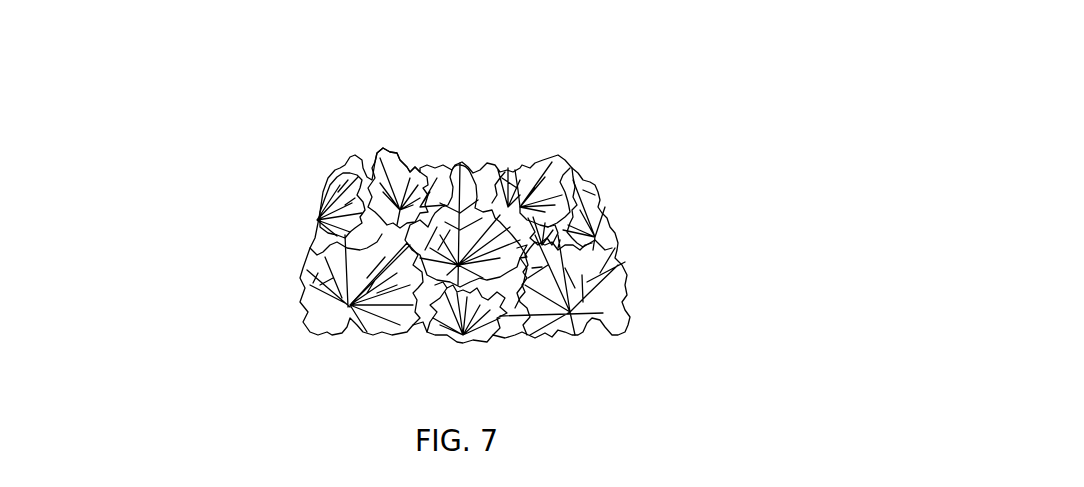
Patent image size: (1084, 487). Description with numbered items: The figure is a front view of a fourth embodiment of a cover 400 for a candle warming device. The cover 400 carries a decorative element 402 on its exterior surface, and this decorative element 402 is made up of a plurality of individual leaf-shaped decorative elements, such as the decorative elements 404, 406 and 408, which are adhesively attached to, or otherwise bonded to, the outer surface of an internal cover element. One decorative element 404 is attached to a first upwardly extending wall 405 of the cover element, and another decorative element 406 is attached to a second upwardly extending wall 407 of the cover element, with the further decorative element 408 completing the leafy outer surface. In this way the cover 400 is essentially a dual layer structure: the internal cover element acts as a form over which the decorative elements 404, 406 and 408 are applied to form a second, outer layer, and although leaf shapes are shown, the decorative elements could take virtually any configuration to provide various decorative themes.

The cover 400 is at (692, 213).
The decorative element 402 is at (292, 216).
The decorative element 404 is at (345, 303).
The first upwardly extending wall 405 is at (307, 275).
The decorative element 406 is at (420, 168).
The second upwardly extending wall 407 is at (313, 185).
The decorative element 408 is at (592, 292).